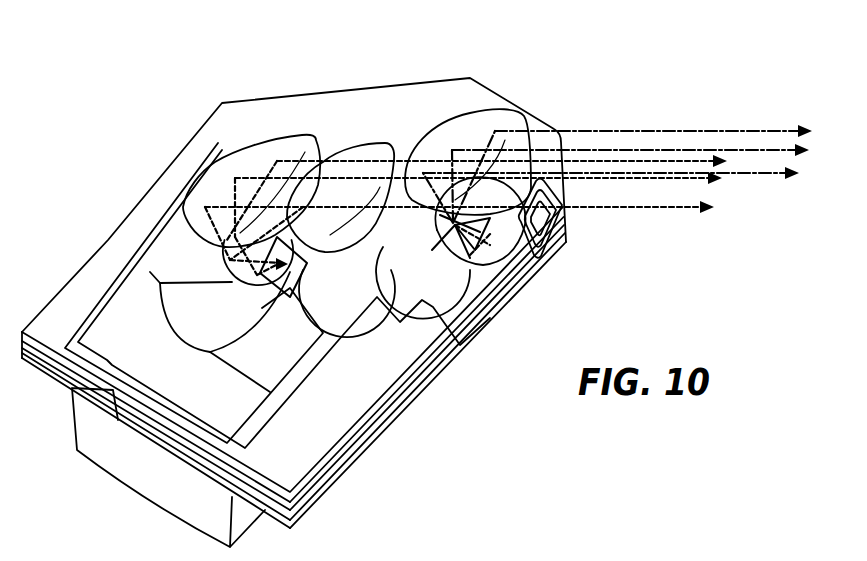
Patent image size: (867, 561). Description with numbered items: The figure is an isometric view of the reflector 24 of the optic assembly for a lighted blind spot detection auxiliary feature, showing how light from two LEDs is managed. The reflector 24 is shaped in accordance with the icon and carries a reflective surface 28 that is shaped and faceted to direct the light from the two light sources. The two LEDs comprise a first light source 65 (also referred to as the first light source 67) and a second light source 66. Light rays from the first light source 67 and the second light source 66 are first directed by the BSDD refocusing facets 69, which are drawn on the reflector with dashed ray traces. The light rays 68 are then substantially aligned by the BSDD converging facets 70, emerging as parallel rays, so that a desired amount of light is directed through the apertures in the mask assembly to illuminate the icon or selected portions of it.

The reflector 24 is at (407, 102).
The reflective surface 28 is at (433, 285).
The first light source 65 is at (207, 353).
The second light source 66 is at (497, 225).
The first light source 67 is at (308, 143).
The light rays 68 is at (602, 130).
The BSDD refocusing facets 69 is at (217, 263).
The BSDD converging facets 70 is at (215, 187).